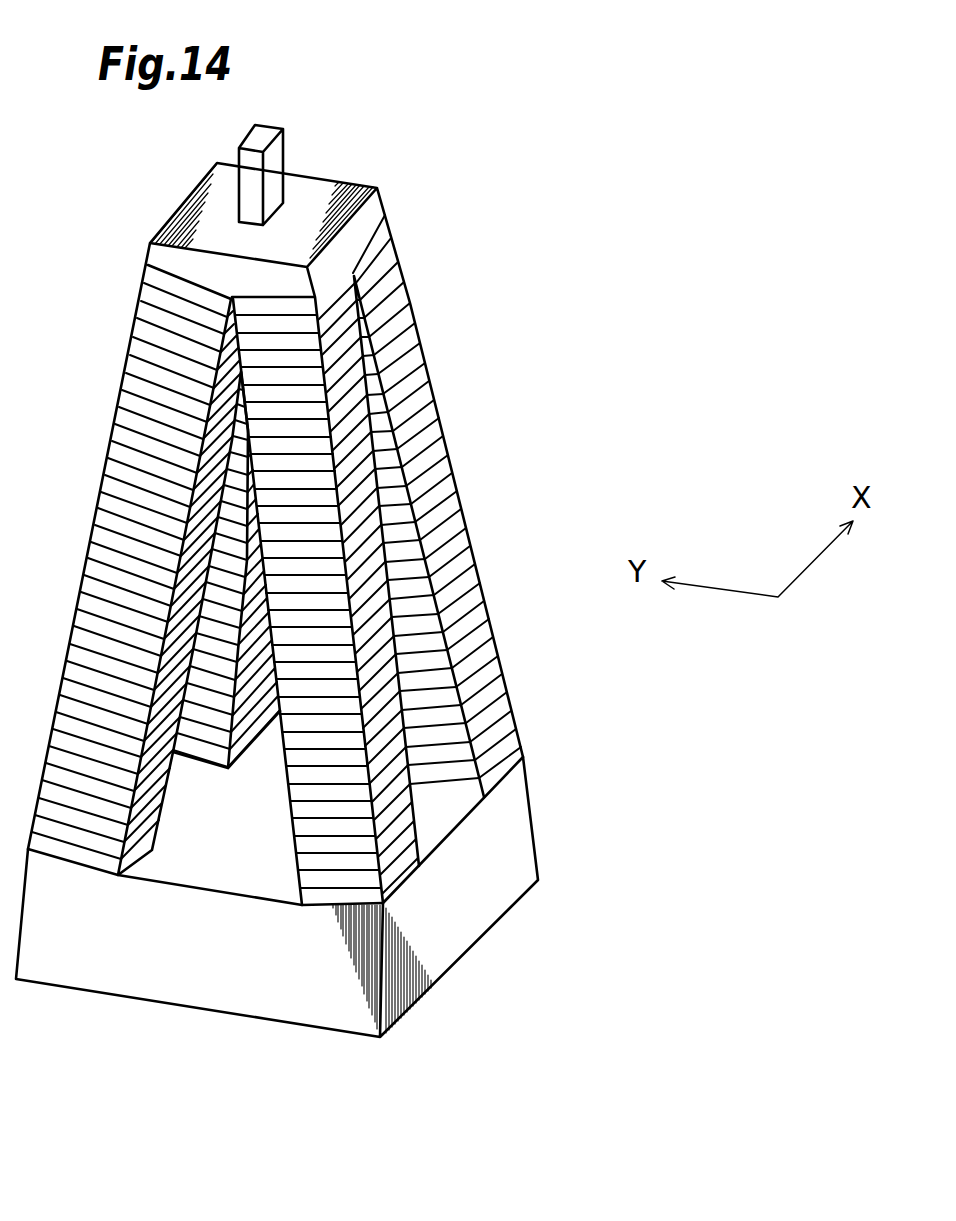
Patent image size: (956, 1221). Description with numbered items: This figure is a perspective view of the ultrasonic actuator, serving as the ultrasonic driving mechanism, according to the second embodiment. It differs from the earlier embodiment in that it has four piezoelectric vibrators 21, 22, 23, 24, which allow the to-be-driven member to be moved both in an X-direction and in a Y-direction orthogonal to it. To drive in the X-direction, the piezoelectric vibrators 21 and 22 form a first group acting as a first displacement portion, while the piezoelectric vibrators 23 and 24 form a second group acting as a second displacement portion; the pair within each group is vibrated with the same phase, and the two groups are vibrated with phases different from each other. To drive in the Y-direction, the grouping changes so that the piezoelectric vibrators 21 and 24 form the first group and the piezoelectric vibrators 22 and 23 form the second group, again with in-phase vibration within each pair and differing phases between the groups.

The piezoelectric vibrator 21 is at (158, 785).
The piezoelectric vibrator 22 is at (413, 838).
The piezoelectric vibrator 23 is at (478, 574).
The piezoelectric vibrator 24 is at (240, 733).